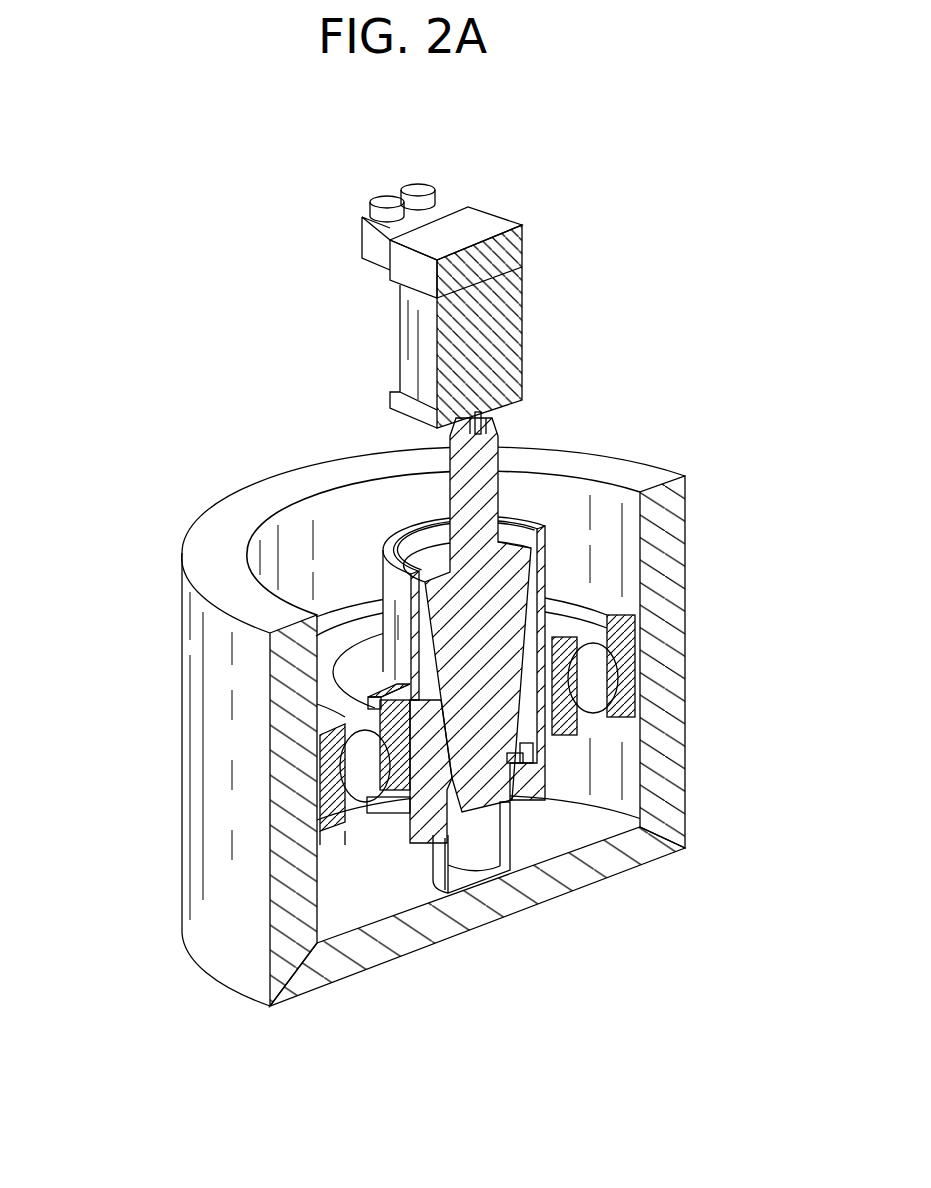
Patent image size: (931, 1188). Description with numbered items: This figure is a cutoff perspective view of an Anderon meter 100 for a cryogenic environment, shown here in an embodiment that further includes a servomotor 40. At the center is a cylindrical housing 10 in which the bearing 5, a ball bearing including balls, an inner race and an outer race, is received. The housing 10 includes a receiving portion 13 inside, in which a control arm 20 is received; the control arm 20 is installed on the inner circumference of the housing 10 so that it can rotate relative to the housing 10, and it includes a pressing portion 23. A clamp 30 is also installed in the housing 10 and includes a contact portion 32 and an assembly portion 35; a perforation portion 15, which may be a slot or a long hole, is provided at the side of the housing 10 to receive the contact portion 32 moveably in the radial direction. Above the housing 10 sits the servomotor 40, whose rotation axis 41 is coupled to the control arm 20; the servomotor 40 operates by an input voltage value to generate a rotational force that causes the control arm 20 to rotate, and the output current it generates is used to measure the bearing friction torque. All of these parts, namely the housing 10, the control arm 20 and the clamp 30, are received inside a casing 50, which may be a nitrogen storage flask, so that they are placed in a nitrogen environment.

The bearing 5 is at (627, 637).
The housing 10 is at (386, 580).
The receiving portion 13 is at (368, 690).
The perforation portion 15 is at (405, 703).
The control arm 20 is at (483, 492).
The pressing portion 23 is at (482, 757).
The clamp 30 is at (214, 731).
The contact portion 32 is at (400, 812).
The assembly portion 35 is at (388, 770).
The servomotor 40 is at (507, 327).
The rotation axis 41 is at (488, 418).
The casing 50 is at (673, 712).
The Anderon meter for cryogenic environment 100 is at (420, 478).